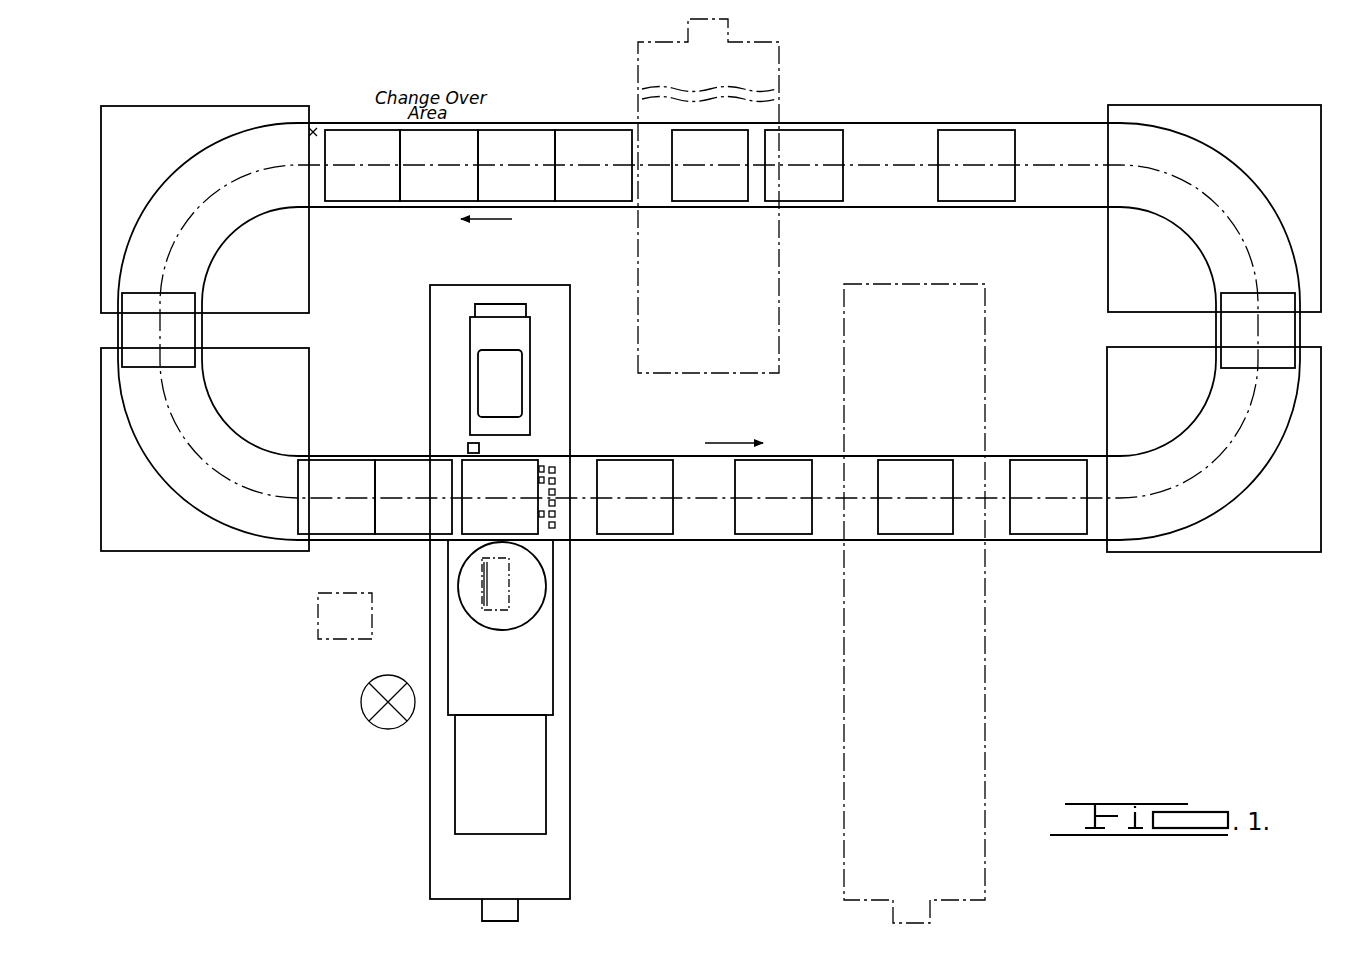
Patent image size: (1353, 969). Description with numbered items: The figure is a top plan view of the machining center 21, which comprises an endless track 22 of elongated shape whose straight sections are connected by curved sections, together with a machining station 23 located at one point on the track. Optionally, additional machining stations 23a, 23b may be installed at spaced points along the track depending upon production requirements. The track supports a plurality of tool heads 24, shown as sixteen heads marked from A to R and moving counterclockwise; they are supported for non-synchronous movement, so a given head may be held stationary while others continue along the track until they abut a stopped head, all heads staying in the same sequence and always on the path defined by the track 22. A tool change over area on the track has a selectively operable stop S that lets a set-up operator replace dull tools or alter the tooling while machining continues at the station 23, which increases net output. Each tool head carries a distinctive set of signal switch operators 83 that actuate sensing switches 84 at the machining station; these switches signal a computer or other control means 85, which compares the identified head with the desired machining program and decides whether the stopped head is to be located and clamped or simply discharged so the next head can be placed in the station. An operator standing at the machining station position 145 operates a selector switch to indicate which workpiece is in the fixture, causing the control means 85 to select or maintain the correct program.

The machining center 21 is at (300, 580).
The endless track 22 is at (985, 122).
The machining station 23 is at (415, 753).
The additional machining station 23a is at (988, 710).
The additional machining station 23b is at (782, 73).
The tool heads 24 is at (792, 540).
The signal switch operators 83 is at (549, 465).
The sensing switches 84 is at (557, 483).
The control means 85 is at (335, 630).
The machining station position 145 is at (370, 710).
The selectively operable stop S is at (318, 124).